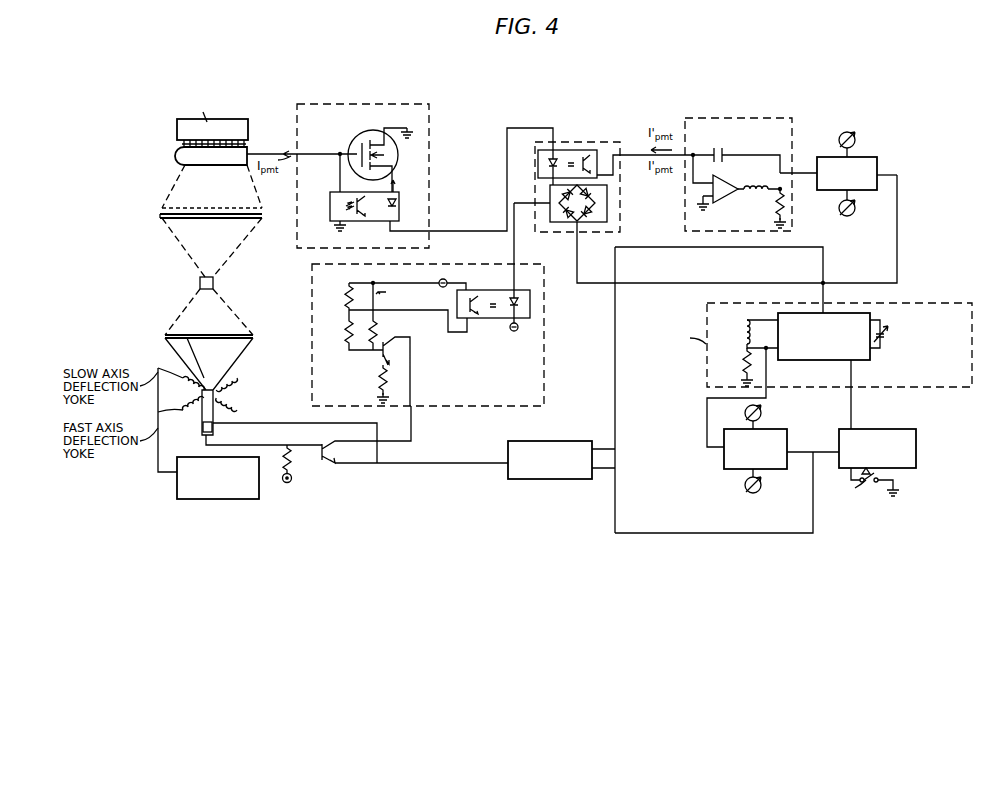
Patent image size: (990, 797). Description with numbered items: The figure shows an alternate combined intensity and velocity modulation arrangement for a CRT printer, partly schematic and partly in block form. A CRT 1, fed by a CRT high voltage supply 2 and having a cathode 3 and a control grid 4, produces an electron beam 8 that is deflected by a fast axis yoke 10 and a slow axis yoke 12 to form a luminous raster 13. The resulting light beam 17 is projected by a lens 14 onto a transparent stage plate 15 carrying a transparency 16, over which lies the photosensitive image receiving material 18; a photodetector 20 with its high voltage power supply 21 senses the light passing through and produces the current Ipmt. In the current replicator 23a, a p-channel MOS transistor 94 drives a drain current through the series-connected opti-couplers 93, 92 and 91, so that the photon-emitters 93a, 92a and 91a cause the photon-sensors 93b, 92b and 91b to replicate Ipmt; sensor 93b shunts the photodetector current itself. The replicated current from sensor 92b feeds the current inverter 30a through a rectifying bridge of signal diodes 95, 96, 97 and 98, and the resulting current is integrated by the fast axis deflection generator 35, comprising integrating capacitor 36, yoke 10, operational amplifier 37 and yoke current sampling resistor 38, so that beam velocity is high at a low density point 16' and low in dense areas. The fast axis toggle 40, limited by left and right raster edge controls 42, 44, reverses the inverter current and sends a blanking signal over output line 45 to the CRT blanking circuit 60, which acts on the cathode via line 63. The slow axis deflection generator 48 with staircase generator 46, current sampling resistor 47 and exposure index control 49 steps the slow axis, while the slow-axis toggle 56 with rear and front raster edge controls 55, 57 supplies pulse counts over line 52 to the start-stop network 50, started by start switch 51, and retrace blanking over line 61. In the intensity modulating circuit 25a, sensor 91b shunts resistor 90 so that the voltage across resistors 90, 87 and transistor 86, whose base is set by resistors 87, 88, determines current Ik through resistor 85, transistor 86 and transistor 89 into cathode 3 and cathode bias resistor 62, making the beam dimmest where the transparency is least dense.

The CRT 1 is at (253, 342).
The CRT high voltage supply 2 is at (248, 499).
The CRT cathode 3 is at (205, 444).
The CRT control grid 4 is at (214, 427).
The electron beam 8 is at (205, 348).
The fast axis deflection yoke 10 is at (237, 378).
The slow axis deflection yoke 12 is at (237, 410).
The luminous raster 13 is at (198, 334).
The lens 14 is at (214, 283).
The transparent stage plate 15 is at (160, 216).
The transparency 16 is at (224, 231).
The low density point 16' is at (205, 187).
The light beam 17 is at (183, 250).
The photosensitive image receiving material 18 is at (262, 212).
The photodetector 20 is at (178, 153).
The high voltage power supply 21 is at (248, 122).
The current replicator 23a is at (430, 112).
The intensity modulating circuit 25a is at (545, 345).
The current inverter 30a is at (590, 141).
The fast axis deflection generator 35 is at (793, 120).
The integrating capacitor 36 is at (722, 150).
The operational amplifier 37 is at (727, 204).
The yoke current sampling resistor 38 is at (778, 202).
The fast axis toggle 40 is at (878, 165).
The left raster edge control 42 is at (853, 134).
The right raster edge control 44 is at (856, 208).
The output line 45 is at (613, 390).
The staircase generator 46 is at (808, 362).
The current sampling resistor 47 is at (744, 368).
The slow axis deflection generator 48 is at (920, 303).
The exposure index control 49 is at (884, 342).
The start-stop network 50 is at (917, 450).
The start switch 51 is at (880, 478).
The line 52 is at (852, 378).
The rear raster edge control 55 is at (745, 413).
The slow-axis toggle 56 is at (723, 455).
The front raster edge control 57 is at (761, 490).
The CRT blanking circuit 60 is at (545, 479).
The line 61 is at (613, 510).
The cathode bias resistor 62 is at (291, 466).
The line 63 is at (466, 465).
The resistor 85 is at (375, 330).
The transistor 86 is at (392, 341).
The resistor 87 is at (347, 330).
The resistor 88 is at (380, 378).
The transistor 89 is at (321, 448).
The resistor 90 is at (347, 298).
The photon-coupled isolator 91 is at (492, 318).
The photon-emitter 91a is at (516, 294).
The photon-sensor 91b is at (469, 306).
The photon-coupled isolator 92 is at (538, 170).
The photon-emitter 92a is at (556, 149).
The photon-sensor 92b is at (586, 165).
The photon-coupled isolator 93 is at (399, 200).
The photon-emitting diode 93a is at (388, 208).
The photon-sensor 93b is at (347, 211).
The p-channel enhancement mode MOS transistor 94 is at (398, 153).
The signal diode 95 is at (566, 198).
The signal diode 96 is at (592, 196).
The signal diode 97 is at (585, 222).
The signal diode 98 is at (567, 213).